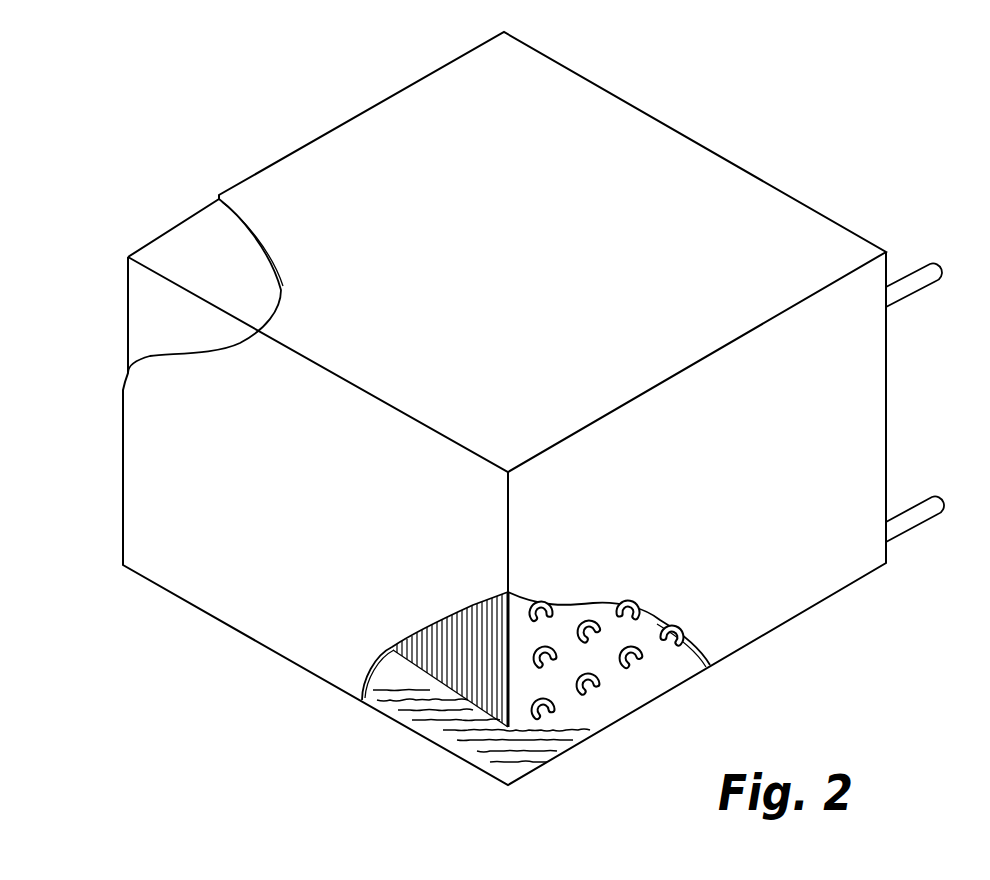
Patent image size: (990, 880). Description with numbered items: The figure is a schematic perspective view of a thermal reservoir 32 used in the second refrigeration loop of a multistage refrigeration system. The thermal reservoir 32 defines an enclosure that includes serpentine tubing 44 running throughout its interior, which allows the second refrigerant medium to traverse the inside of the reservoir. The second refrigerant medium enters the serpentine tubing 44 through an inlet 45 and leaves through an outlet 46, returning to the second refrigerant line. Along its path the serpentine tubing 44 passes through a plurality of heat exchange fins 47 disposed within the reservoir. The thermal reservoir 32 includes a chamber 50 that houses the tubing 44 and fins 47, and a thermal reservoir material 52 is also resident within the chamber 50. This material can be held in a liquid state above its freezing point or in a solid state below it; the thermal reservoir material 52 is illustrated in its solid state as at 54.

The thermal reservoir 32 is at (750, 103).
The serpentine tubing 44 is at (600, 688).
The inlet 45 is at (917, 283).
The outlet 46 is at (927, 515).
The heat exchange fins 47 is at (647, 635).
The chamber 50 is at (430, 725).
The thermal reservoir material 52 is at (520, 763).
The solid state thermal reservoir material 54 is at (141, 289).